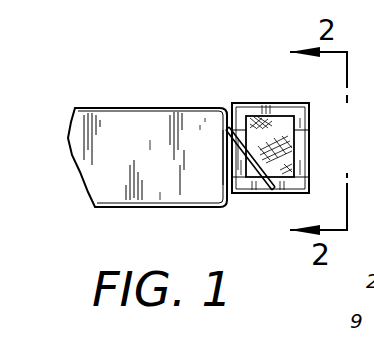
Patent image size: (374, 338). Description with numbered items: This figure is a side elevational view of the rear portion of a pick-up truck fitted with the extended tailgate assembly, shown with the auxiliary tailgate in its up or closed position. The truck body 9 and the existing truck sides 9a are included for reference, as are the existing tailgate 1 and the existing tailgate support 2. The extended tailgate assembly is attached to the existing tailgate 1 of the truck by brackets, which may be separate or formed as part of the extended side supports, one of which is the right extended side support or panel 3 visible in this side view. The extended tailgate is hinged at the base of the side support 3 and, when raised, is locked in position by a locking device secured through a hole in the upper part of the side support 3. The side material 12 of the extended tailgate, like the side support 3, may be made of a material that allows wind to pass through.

The existing tailgate 1 is at (257, 196).
The existing tailgate support 2 is at (233, 160).
The right extended side support 3 is at (310, 148).
The truck body 9 is at (128, 136).
The existing truck sides 9a is at (213, 132).
The side material 12 is at (270, 124).